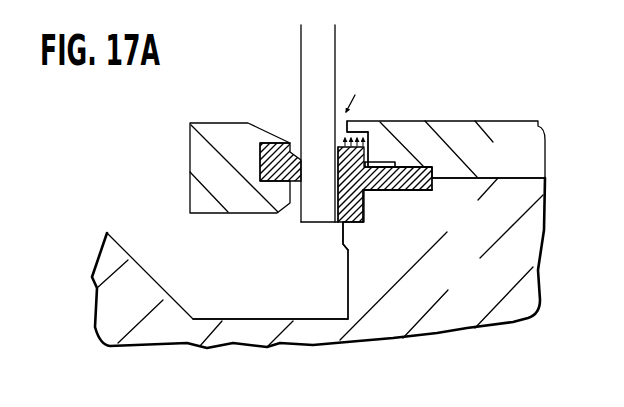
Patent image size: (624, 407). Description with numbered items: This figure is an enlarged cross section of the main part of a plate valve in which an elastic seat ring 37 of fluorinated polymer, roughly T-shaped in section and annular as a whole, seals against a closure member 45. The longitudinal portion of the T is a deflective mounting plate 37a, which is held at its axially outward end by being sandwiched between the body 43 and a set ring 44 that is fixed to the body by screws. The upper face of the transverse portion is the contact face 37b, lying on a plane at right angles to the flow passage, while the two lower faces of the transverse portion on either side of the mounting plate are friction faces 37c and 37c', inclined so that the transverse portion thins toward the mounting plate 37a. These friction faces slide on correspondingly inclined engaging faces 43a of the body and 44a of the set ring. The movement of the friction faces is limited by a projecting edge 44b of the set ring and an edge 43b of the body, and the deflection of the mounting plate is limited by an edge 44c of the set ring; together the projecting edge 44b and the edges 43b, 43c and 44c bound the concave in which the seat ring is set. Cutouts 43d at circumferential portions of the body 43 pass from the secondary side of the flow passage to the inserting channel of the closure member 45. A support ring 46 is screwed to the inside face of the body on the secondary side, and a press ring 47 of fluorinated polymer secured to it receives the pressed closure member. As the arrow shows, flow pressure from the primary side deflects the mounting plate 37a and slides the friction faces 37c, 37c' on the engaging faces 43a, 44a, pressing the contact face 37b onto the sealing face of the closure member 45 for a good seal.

The seat ring 37 is at (434, 163).
The mounting plate 37a is at (422, 193).
The contact face 37b is at (334, 170).
The friction face 37c is at (330, 214).
The friction face 37c' is at (320, 255).
The body 43 is at (130, 318).
The engaging face 43a is at (372, 197).
The edge 43b is at (348, 225).
The edge 43c is at (375, 216).
The cutouts 43d is at (247, 301).
The set ring 44 is at (523, 161).
The engaging face 44a is at (371, 157).
The projecting edge 44b is at (353, 128).
The edge 44c is at (375, 156).
The closure member 45 is at (307, 50).
The support ring 46 is at (220, 122).
The press ring 47 is at (272, 152).